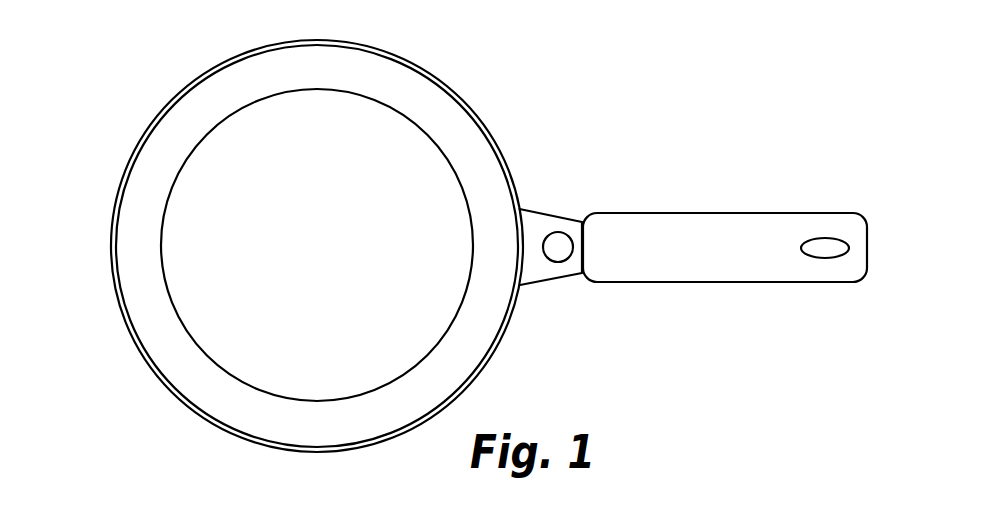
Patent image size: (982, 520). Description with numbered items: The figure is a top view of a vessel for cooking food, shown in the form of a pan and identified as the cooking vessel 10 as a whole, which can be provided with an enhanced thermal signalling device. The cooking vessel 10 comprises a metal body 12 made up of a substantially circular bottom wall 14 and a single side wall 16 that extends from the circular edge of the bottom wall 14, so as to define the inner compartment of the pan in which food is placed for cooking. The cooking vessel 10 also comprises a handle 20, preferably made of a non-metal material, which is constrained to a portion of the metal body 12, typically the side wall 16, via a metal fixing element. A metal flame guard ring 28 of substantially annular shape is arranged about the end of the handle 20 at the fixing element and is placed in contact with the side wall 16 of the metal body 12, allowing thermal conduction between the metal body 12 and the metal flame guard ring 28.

The cooking vessel 10 is at (553, 140).
The metal body 12 is at (418, 63).
The bottom wall 14 is at (210, 202).
The side wall 16 is at (148, 278).
The handle 20 is at (753, 212).
The metal flame guard ring 28 is at (550, 280).